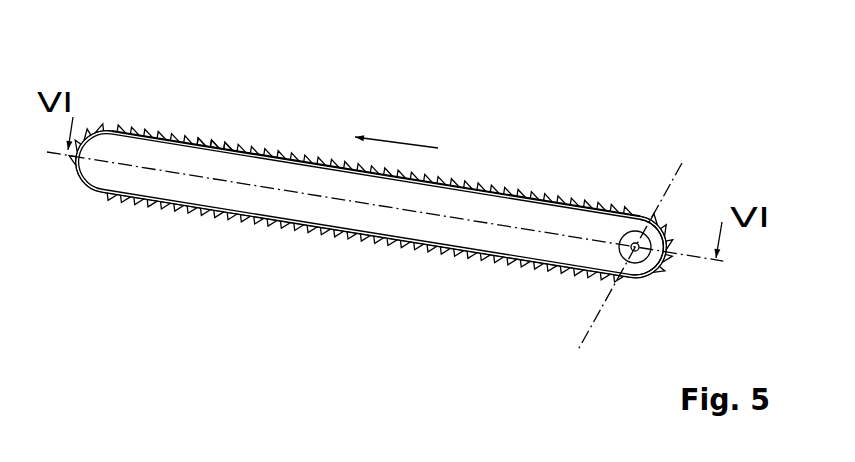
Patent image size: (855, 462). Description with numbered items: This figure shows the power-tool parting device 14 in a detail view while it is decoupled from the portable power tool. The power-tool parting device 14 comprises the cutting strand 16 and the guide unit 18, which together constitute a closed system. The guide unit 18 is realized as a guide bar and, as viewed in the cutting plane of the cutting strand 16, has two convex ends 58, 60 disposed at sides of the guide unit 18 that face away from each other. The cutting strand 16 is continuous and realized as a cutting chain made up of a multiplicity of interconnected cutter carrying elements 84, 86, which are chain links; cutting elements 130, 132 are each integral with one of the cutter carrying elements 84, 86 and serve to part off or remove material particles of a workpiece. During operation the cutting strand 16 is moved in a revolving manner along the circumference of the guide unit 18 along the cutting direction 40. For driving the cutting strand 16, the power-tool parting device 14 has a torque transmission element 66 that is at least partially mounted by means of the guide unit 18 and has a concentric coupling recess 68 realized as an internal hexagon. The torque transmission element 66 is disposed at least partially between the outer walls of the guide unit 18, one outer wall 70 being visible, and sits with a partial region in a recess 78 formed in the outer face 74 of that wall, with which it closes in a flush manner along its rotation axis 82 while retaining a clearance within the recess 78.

The power-tool parting device 14 is at (610, 102).
The cutting strand 16 is at (163, 137).
The guide unit 18 is at (207, 190).
The cutting direction 40 is at (403, 138).
The convex end 58 is at (83, 192).
The convex end 60 is at (668, 280).
The torque transmission element 66 is at (637, 263).
The coupling recess 68 is at (632, 243).
The outer wall 70 is at (527, 240).
The outer face 74 is at (448, 220).
The recess 78 is at (650, 270).
The rotation axis 82 is at (683, 167).
The cutter carrying element 84 is at (203, 140).
The cutter carrying element 86 is at (217, 140).
The cutting element 130 is at (218, 140).
The cutting element 132 is at (217, 140).